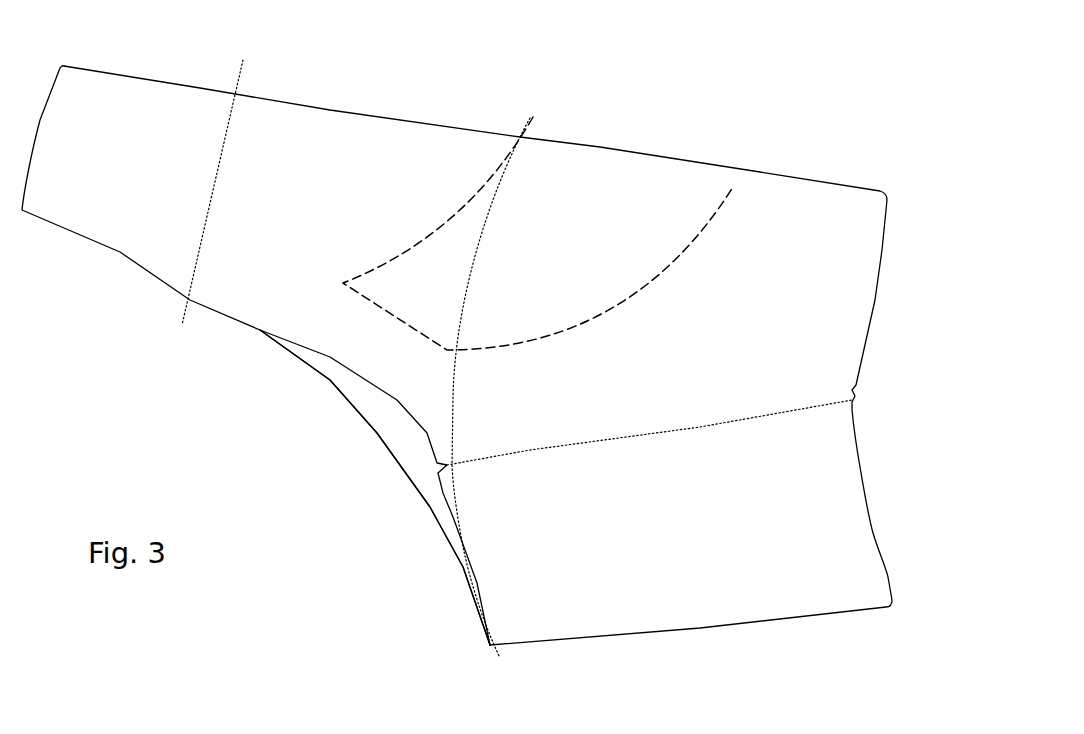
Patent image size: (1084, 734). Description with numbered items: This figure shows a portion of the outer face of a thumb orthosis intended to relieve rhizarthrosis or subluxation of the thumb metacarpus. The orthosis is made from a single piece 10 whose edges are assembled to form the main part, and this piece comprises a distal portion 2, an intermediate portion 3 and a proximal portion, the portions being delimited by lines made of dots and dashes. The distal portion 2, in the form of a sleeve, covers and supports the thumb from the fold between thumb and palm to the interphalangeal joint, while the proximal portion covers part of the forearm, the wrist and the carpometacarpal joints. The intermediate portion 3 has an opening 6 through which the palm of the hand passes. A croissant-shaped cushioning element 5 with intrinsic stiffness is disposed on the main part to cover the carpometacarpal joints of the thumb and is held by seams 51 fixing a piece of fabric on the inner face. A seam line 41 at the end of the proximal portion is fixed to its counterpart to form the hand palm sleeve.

The single piece 10 is at (810, 136).
The distal portion 2 is at (122, 222).
The intermediate portion 3 is at (345, 313).
The cushioning element 5 is at (567, 170).
The seams 51 is at (722, 193).
The opening 6 is at (406, 434).
The seam line 41 is at (588, 435).